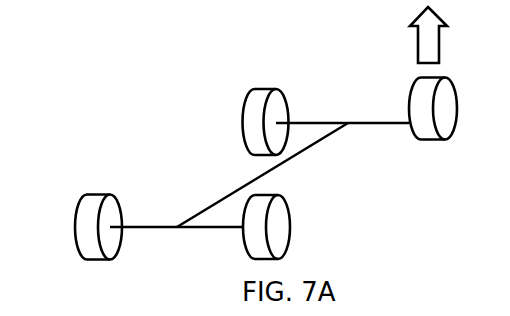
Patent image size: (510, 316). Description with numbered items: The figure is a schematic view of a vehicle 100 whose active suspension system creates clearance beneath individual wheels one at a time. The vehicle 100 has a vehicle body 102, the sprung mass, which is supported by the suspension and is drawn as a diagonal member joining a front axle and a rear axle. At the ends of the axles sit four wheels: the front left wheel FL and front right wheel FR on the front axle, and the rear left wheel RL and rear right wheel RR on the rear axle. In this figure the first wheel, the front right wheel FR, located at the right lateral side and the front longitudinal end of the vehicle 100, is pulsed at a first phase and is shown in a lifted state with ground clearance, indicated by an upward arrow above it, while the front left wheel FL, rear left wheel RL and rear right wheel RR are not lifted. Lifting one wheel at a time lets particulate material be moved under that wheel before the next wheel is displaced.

The vehicle 100 is at (336, 97).
The vehicle body 102 is at (293, 153).
The front left wheel FL is at (275, 75).
The front right wheel FR is at (433, 73).
The rear left wheel RL is at (100, 193).
The rear right wheel RR is at (277, 195).